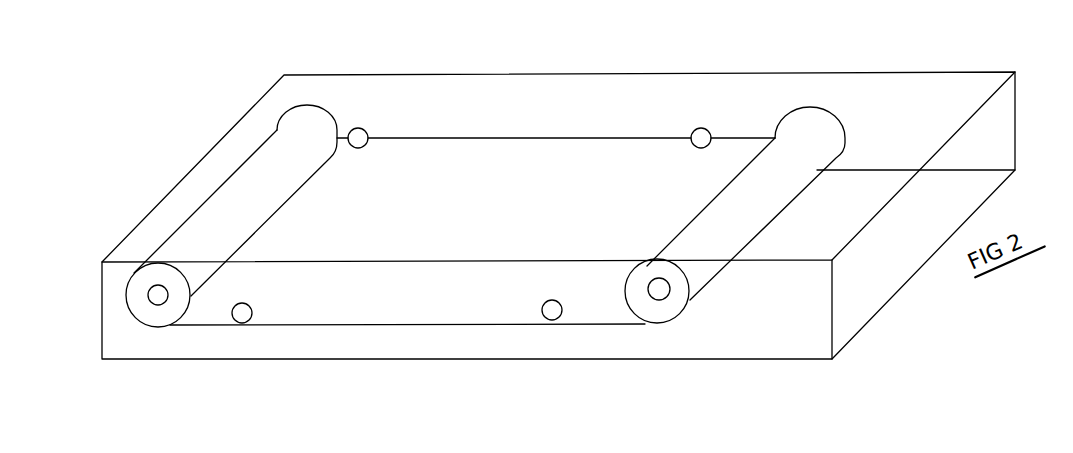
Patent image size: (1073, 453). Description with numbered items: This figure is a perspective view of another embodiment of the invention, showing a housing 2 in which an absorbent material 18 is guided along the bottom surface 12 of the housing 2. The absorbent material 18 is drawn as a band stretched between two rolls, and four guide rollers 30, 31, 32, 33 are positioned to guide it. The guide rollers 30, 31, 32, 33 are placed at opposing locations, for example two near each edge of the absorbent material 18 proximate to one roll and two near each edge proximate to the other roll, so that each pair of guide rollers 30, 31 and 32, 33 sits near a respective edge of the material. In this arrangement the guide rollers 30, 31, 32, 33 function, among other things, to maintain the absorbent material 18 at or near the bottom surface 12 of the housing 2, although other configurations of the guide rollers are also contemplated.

The housing 2 is at (941, 40).
The bottom surface 12 is at (415, 340).
The absorbent pad 18 is at (482, 221).
The guide roller 30 is at (362, 134).
The guide roller 31 is at (703, 134).
The guide roller 32 is at (240, 316).
The guide roller 33 is at (550, 313).